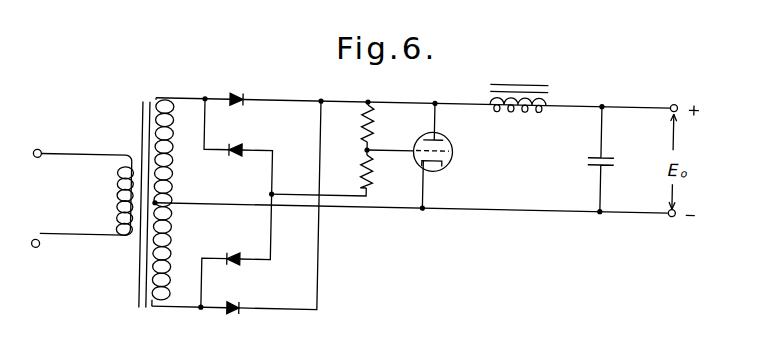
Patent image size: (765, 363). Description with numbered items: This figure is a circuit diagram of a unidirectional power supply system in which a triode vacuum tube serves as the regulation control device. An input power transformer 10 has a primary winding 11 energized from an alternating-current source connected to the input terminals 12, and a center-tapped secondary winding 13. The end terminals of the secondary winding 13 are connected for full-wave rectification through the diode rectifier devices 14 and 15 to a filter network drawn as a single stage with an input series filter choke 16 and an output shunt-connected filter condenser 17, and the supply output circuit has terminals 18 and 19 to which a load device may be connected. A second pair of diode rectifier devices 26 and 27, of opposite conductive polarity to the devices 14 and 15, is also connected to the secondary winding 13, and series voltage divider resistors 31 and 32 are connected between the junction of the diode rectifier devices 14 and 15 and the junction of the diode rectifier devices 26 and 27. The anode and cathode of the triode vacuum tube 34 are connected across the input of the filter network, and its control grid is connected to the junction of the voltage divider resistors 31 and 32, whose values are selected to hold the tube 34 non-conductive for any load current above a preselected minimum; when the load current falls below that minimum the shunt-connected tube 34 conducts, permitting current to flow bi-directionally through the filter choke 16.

The input power transformer 10 is at (150, 101).
The primary winding 11 is at (119, 200).
The input terminals 12 is at (38, 164).
The center-tapped secondary winding 13 is at (171, 122).
The diode rectifier device 14 is at (237, 94).
The diode rectifier device 15 is at (231, 315).
The diode rectifier device 26 is at (230, 159).
The diode rectifier device 27 is at (236, 258).
The voltage divider resistor 31 is at (372, 117).
The voltage divider resistor 32 is at (372, 173).
The triode vacuum tube 34 is at (454, 155).
The input series filter choke 16 is at (512, 104).
The filter condenser 17 is at (592, 152).
The output terminal 18 is at (674, 98).
The output terminal 19 is at (674, 211).